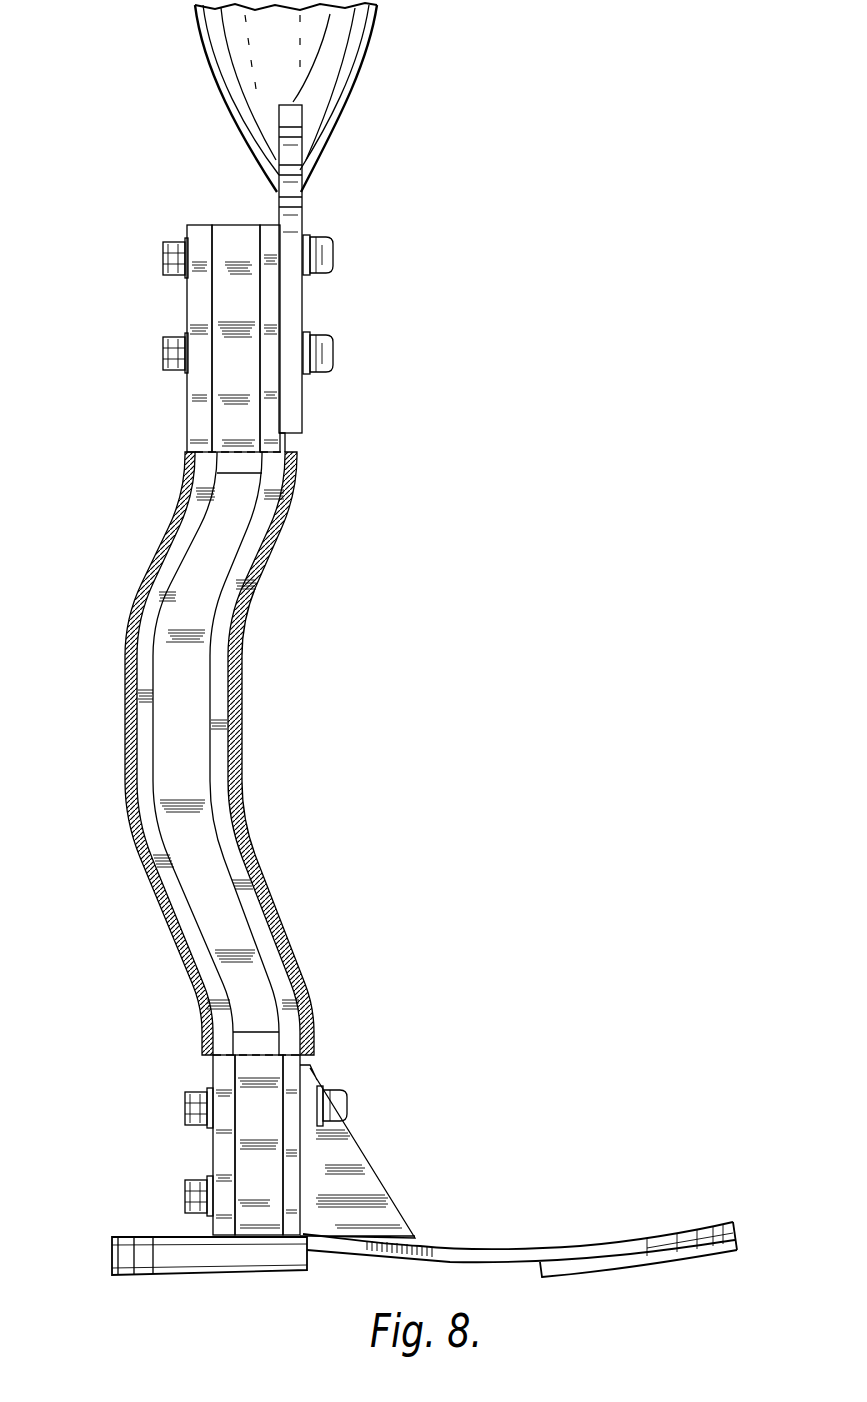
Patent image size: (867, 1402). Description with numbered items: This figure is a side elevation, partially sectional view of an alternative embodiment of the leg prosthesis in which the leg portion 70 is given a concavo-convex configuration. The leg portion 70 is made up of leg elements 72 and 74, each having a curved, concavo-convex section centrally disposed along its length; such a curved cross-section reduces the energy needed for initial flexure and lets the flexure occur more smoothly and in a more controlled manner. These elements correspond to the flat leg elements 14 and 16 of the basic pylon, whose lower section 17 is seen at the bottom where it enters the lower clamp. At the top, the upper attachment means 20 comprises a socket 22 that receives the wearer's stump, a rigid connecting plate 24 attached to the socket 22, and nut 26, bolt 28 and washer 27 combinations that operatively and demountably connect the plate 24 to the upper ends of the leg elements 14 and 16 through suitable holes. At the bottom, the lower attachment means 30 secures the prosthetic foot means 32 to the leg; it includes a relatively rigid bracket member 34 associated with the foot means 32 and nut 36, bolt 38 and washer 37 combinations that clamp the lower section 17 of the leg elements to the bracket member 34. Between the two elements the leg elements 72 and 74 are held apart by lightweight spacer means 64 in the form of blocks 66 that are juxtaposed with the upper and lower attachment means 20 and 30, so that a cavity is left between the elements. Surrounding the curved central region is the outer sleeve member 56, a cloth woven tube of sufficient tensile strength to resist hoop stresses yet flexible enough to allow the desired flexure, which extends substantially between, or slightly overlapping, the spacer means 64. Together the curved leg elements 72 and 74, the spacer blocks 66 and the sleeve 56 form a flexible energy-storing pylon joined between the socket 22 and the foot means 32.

The leg element 14 is at (305, 430).
The leg element 16 is at (200, 434).
The lower section 17 is at (237, 1062).
The upper attachment means 20 is at (250, 728).
The socket 22 is at (205, 75).
The rigid connecting plate 24 is at (300, 222).
The nut 26 is at (172, 284).
The washer 27 is at (185, 240).
The bolt 28 is at (335, 254).
The lower attachment means 30 is at (279, 1151).
The prosthetic foot means 32 is at (452, 1243).
The bracket member 34 is at (385, 1172).
The nut 36 is at (190, 1122).
The washer 37 is at (210, 1168).
The bolt 38 is at (348, 1105).
The outer sleeve member 56 is at (186, 497).
The spacer means 64 is at (232, 245).
The block 66 is at (226, 246).
The leg portion 70 is at (224, 753).
The leg element 72 is at (228, 800).
The leg element 74 is at (148, 793).